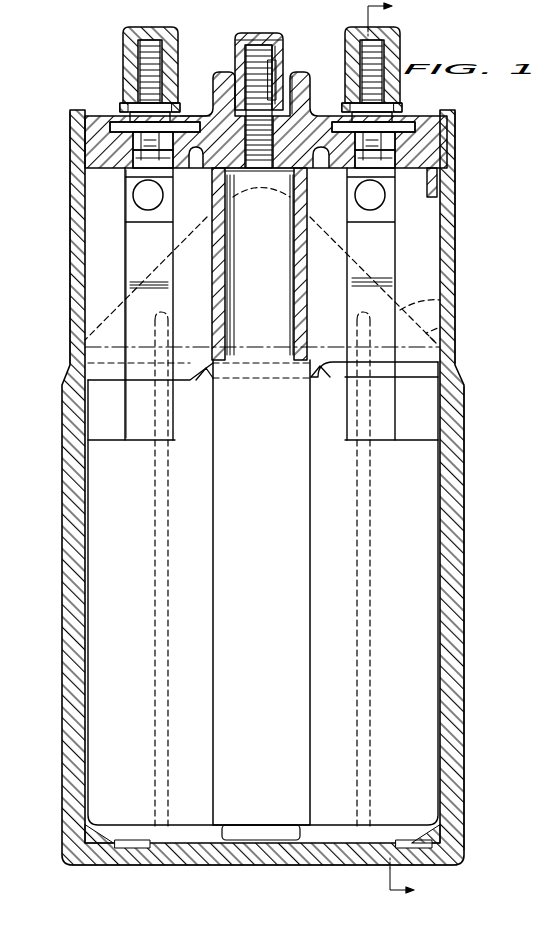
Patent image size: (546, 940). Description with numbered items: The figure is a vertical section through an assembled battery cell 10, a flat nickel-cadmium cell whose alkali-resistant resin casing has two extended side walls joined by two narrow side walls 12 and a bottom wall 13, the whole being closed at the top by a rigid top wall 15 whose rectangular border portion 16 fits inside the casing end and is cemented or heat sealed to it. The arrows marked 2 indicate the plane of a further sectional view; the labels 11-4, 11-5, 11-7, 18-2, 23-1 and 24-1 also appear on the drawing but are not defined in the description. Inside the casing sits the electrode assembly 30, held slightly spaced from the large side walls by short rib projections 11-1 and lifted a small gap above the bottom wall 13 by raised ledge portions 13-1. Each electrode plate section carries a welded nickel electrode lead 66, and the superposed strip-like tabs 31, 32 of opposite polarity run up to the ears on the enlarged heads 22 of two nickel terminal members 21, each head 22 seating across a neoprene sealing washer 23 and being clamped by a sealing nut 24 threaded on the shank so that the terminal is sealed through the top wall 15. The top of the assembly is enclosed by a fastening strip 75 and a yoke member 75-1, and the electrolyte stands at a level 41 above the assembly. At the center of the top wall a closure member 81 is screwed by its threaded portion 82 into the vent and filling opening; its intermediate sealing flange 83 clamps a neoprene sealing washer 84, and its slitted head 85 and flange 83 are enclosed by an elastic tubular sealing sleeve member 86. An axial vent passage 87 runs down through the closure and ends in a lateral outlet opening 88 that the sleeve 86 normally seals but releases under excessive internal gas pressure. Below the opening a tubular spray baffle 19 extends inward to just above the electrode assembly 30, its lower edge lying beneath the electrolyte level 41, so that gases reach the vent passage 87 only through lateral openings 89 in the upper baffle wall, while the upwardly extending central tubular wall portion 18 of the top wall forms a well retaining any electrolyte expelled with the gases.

The battery cell 10 is at (86, 82).
The section line 2- 2 is at (400, 450).
The rib projections 11-1 is at (155, 580).
The upper can wall portion 11-4 is at (100, 237).
The lower can wall portion 11-5 is at (466, 578).
The phantom line 11-7 is at (455, 298).
The narrow side walls 12 is at (70, 505).
The bottom wall 13 is at (130, 866).
The raised ledge portions 13-1 is at (117, 840).
The top wall 15 is at (207, 103).
The border portion 16 is at (442, 192).
The central tubular wall portion 18 is at (220, 70).
The stud portion 18-2 is at (248, 3).
The tubular spray baffle structure 19 is at (222, 260).
The terminal members 21 is at (146, 152).
The enlarged head 22 is at (135, 166).
The sealing washer 23 is at (133, 160).
The terminal bar 23-1 is at (112, 127).
The sealing nut 24 is at (128, 118).
The terminal nut 24-1 is at (170, 26).
The electrode assembly 30 is at (430, 640).
The electrode leads or tabs 31 is at (110, 272).
The electrode leads or tabs 32 is at (412, 257).
The electrolyte level 41 is at (447, 327).
The electrode lead 66 is at (130, 330).
The fastening strip 75 is at (308, 548).
The yoke member 75-1 is at (318, 366).
The closure member 81 is at (130, 114).
The threaded portion 82 is at (304, 170).
The intermediate sealing flange 83 is at (237, 103).
The sealing washer 84 is at (297, 104).
The head 85 is at (257, 38).
The tubular sealing sleeve member 86 is at (277, 58).
The axial vent passage 87 is at (258, 172).
The lateral outlet opening 88 is at (272, 80).
The lateral openings 89 is at (213, 187).